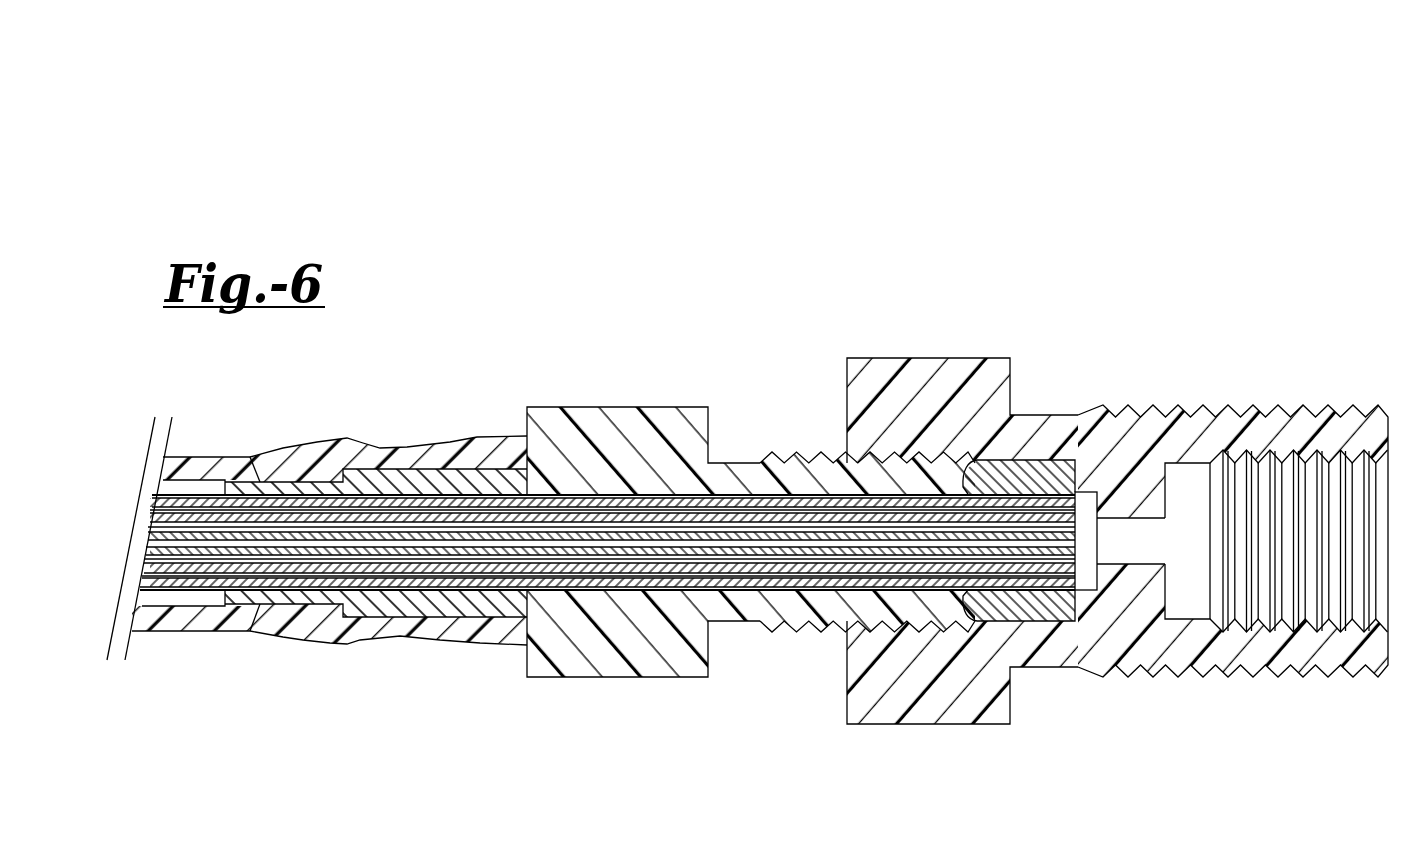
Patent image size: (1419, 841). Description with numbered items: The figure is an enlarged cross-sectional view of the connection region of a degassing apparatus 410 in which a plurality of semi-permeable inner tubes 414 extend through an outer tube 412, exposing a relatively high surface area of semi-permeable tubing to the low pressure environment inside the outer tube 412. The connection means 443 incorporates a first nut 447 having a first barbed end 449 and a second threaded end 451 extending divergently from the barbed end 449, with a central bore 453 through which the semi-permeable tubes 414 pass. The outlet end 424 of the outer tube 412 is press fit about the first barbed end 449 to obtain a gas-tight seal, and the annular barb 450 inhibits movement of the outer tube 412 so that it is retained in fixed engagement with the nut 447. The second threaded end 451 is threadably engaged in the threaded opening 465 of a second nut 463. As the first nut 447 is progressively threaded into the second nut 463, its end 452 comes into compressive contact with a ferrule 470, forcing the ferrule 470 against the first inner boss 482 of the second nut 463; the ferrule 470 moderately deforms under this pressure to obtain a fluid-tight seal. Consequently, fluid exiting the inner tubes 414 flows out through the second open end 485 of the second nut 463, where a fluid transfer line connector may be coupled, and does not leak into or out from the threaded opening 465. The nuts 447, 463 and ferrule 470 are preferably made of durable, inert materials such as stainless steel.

The apparatus 410 is at (734, 437).
The outer tube 412 is at (193, 455).
The semi-permeable inner tubes 414 is at (165, 497).
The outlet end 424 is at (250, 455).
The connection means 443 is at (1157, 393).
The first nut 447 is at (573, 677).
The first barbed end 449 is at (318, 468).
The annular barb 450 is at (357, 622).
The second threaded end 451 is at (893, 452).
The end of nut 452 is at (966, 486).
The central bore 453 is at (753, 582).
The second nut 463 is at (927, 724).
The threaded opening 465 is at (905, 622).
The ferrule 470 is at (1043, 622).
The first inner boss 482 is at (1080, 460).
The second open end 485 is at (1409, 402).